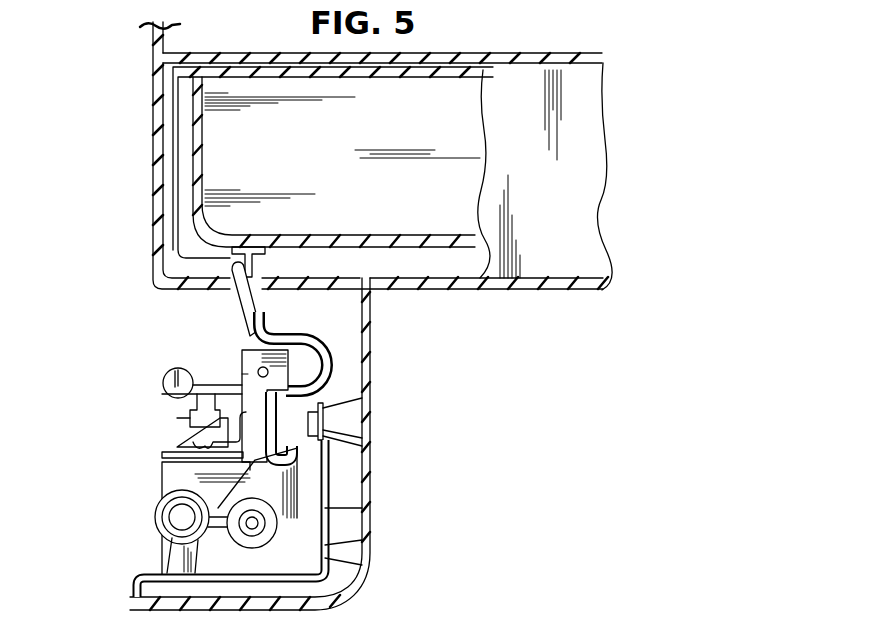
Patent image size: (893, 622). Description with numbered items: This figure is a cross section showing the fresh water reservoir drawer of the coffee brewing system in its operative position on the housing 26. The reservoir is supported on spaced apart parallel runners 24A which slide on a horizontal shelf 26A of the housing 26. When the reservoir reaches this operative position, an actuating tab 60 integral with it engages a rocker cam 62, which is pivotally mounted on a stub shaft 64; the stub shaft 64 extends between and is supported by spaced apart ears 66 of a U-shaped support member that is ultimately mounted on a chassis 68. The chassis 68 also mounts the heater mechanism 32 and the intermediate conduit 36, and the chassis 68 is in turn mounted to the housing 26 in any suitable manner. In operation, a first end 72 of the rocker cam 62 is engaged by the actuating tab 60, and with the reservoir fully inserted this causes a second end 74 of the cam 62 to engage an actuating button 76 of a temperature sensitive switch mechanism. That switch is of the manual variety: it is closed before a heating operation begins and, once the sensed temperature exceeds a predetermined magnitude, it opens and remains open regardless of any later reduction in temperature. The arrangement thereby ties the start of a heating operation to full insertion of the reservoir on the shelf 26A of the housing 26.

The runners 24A is at (208, 258).
The housing 26 is at (372, 408).
The horizontal shelf 26A is at (437, 284).
The actuating tab 60 is at (252, 268).
The first end 72 is at (242, 298).
The rocker cam 62 is at (280, 331).
The stub shaft 64 is at (259, 369).
The second end 74 is at (170, 383).
The actuating button 76 is at (200, 402).
The ears 66 is at (268, 393).
The heater 32 is at (268, 533).
The intermediate conduit 36 is at (158, 502).
The chassis 68 is at (142, 576).